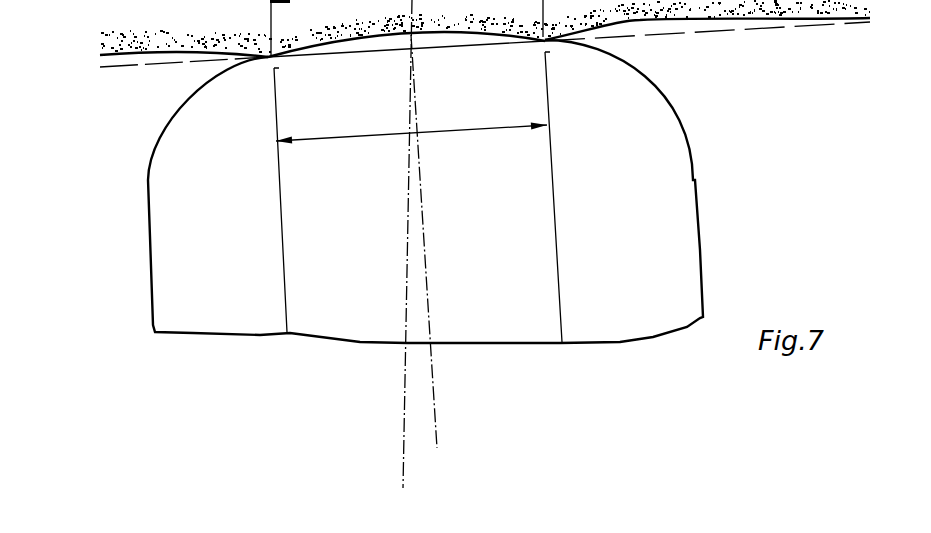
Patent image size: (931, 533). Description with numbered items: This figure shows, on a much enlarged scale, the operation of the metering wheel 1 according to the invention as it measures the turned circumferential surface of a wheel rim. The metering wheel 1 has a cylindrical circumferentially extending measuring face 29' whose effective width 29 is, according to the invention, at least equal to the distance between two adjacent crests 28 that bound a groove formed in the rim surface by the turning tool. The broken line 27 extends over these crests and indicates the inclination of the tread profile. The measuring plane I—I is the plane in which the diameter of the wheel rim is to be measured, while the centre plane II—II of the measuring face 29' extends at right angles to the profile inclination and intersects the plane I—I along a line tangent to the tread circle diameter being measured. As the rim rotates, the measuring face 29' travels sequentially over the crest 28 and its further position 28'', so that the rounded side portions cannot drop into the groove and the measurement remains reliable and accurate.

The metering wheel 1 is at (650, 238).
The broken line indicating profile inclination 27 is at (710, 32).
The crest 28 is at (169, 91).
The crest position 28'' is at (707, 82).
The effective width of measuring face 29 is at (309, 209).
The cylindrical circumferential measuring face 29' is at (308, 135).
The measuring plane I— I is at (396, 248).
The centre plane II—II of the measuring face II is at (439, 244).